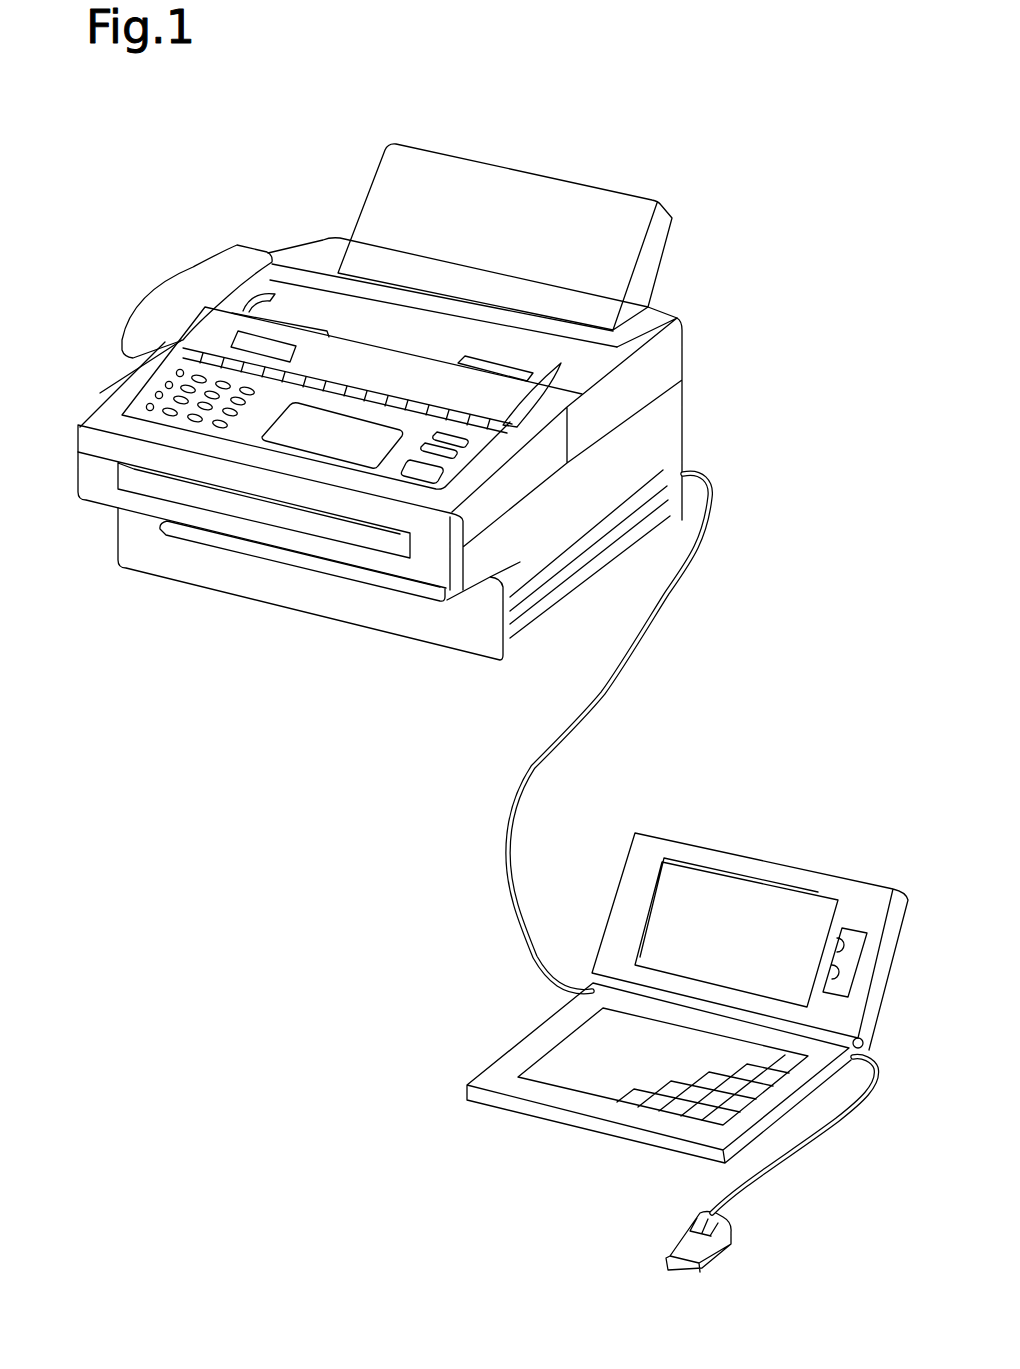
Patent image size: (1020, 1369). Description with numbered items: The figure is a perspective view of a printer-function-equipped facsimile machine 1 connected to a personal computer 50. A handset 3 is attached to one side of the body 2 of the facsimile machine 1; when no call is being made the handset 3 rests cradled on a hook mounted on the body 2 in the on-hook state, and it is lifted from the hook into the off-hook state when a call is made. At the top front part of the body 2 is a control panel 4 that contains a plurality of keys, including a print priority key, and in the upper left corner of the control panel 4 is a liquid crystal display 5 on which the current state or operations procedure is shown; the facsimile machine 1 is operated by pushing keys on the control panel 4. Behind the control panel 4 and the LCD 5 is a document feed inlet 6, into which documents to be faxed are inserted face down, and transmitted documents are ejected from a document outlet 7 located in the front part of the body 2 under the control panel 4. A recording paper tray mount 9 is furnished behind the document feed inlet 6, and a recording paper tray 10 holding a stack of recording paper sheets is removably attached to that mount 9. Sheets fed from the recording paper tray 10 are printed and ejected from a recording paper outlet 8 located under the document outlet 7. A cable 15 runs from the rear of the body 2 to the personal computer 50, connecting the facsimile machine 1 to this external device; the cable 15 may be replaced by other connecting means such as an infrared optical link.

The facsimile machine 1 is at (706, 443).
The body 2 is at (672, 370).
The handset 3 is at (196, 273).
The control panel 4 is at (150, 402).
The liquid crystal display (LCD) 5 is at (291, 353).
The document feed inlet 6 is at (408, 340).
The document outlet 7 is at (155, 488).
The recording paper outlet 8 is at (287, 553).
The recording paper tray mount 9 is at (337, 243).
The recording paper tray 10 is at (545, 192).
The cable 15 is at (646, 637).
The personal computer 50 is at (437, 1095).